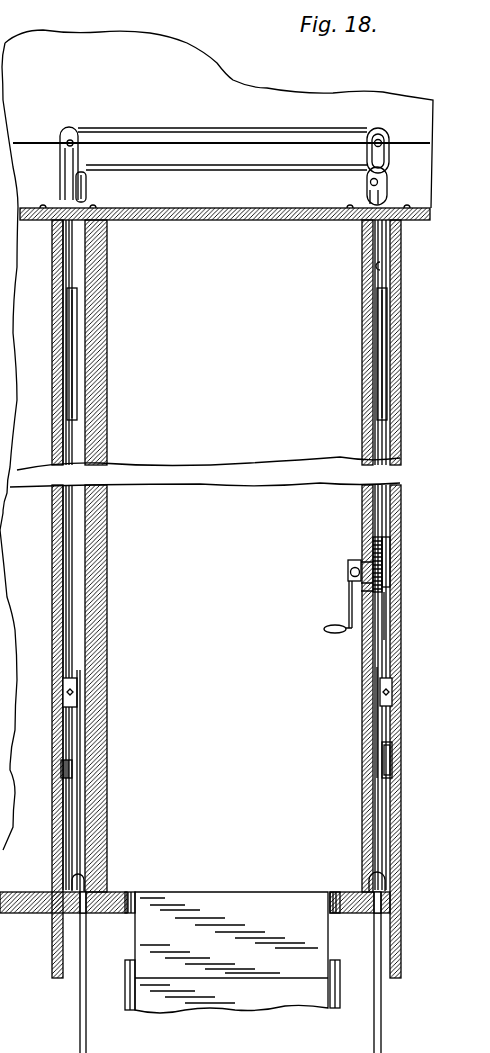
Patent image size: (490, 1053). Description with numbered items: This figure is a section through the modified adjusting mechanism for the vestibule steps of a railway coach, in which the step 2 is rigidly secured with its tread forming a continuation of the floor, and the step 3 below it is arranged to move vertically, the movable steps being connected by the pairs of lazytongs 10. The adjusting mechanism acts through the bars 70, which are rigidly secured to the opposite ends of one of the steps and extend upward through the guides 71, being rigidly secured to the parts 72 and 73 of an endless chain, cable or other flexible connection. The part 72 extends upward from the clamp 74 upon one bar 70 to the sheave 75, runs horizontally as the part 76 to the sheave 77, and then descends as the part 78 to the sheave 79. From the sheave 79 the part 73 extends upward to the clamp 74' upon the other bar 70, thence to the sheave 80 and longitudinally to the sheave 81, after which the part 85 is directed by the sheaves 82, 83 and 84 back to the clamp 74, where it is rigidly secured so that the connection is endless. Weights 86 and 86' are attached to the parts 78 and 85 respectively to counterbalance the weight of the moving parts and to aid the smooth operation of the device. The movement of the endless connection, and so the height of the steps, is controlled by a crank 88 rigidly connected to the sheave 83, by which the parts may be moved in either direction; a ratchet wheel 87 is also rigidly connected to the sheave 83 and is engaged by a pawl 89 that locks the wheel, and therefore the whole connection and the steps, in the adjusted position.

The sheave 80 is at (72, 128).
The sheave 81 is at (377, 128).
The sheave 75 is at (387, 173).
The sheave 77 is at (88, 183).
The horizontal part of chain 76 is at (248, 167).
The part of chain 85 is at (381, 266).
The weight 86 is at (106, 354).
The weight 86' is at (349, 354).
The downward part of chain 78 is at (70, 558).
The part of chain 73 is at (67, 595).
The pawl 89 is at (364, 536).
The ratchet wheel 87 is at (357, 578).
The crank 88 is at (332, 623).
The sheave 83 is at (392, 548).
The sheave 82 is at (390, 587).
The part of chain 72 is at (388, 628).
The clamp 74 is at (411, 715).
The clamp 74' is at (50, 780).
The sheave 84 is at (398, 748).
The sheave 79 is at (63, 763).
The bar 70 is at (82, 793).
The guide 71 is at (74, 873).
The step 2 is at (213, 903).
The step 3 is at (227, 990).
The lazytongs 10 is at (125, 978).